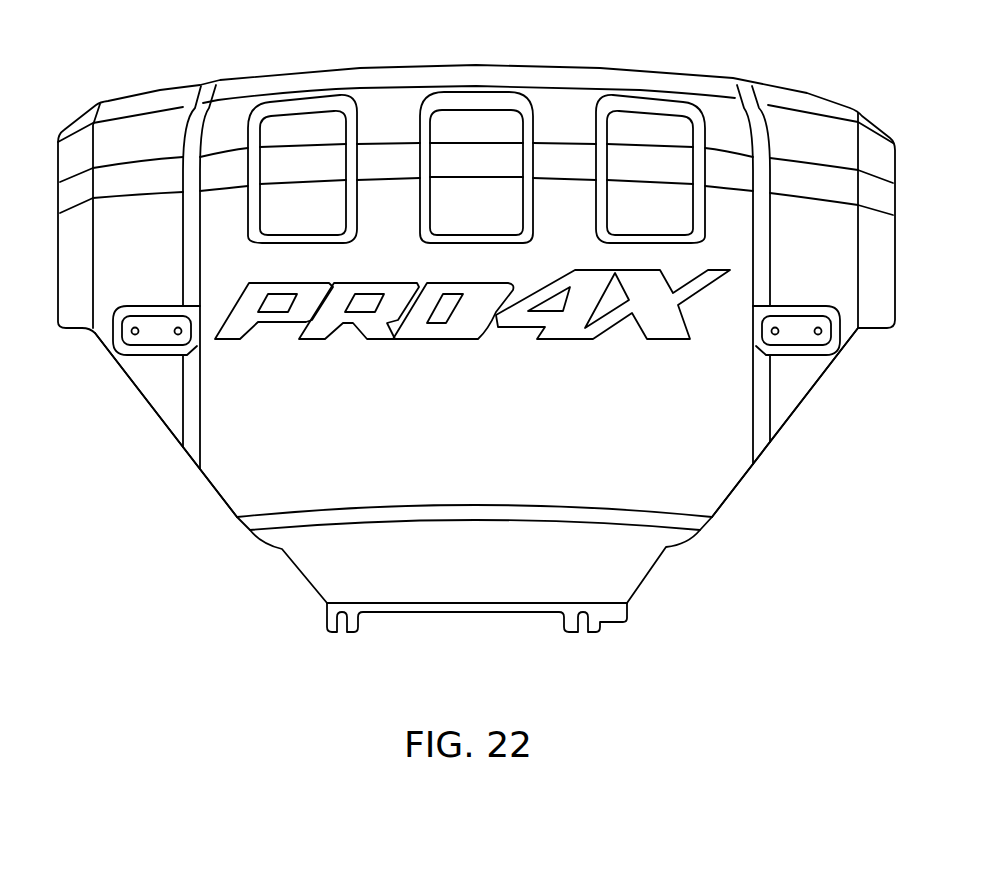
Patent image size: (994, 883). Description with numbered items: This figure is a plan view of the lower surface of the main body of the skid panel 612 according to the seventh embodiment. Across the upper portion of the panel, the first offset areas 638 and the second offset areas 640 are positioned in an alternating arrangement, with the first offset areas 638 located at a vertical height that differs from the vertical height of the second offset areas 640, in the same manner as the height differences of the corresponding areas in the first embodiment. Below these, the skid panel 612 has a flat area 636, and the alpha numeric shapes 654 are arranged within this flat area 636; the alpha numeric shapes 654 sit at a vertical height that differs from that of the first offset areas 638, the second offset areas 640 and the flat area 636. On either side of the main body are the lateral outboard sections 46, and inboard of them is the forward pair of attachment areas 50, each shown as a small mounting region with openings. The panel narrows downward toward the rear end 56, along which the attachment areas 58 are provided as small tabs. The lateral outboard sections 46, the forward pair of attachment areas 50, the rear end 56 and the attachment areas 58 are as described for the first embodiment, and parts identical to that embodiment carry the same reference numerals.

The skid panel 612 is at (288, 48).
The lateral outboard sections 46 is at (128, 275).
The second offset areas 640 is at (223, 170).
The first offset areas 638 is at (310, 210).
The alpha numeric shapes 654 is at (563, 340).
The forward pair of attachment areas 50 is at (157, 335).
The flat area 636 is at (428, 447).
The rear end 56 is at (610, 560).
The attachment areas 58 is at (350, 637).